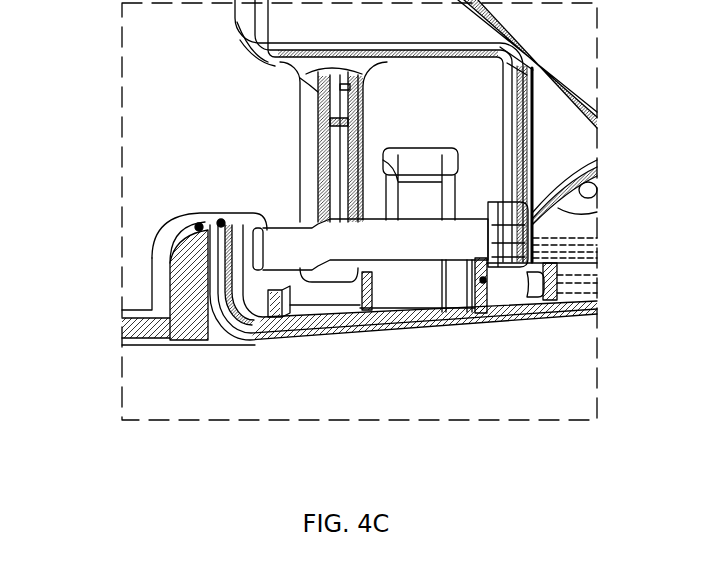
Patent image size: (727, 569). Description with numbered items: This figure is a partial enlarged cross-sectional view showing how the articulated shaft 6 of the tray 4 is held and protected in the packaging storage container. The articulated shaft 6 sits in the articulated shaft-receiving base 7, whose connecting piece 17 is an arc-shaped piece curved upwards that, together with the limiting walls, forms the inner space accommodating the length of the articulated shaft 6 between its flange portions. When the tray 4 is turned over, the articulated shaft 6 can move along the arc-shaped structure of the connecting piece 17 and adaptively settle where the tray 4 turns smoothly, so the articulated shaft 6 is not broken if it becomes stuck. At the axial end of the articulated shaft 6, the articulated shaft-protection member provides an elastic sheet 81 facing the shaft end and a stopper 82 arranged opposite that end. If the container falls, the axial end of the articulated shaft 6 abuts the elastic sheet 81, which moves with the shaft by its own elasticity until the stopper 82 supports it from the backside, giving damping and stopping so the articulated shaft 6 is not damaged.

The tray 4 is at (552, 35).
The articulated shaft 6 is at (420, 238).
The articulated shaft-receiving base 7 is at (422, 287).
The connecting piece 17 is at (483, 283).
The elastic sheet 81 is at (221, 223).
The stopper 82 is at (199, 227).